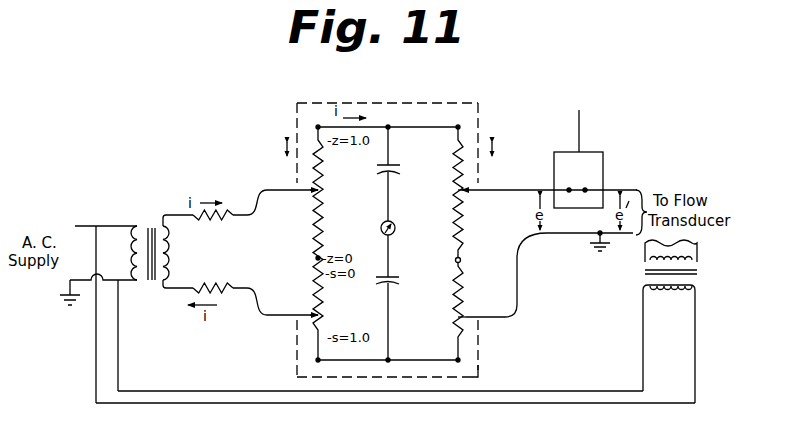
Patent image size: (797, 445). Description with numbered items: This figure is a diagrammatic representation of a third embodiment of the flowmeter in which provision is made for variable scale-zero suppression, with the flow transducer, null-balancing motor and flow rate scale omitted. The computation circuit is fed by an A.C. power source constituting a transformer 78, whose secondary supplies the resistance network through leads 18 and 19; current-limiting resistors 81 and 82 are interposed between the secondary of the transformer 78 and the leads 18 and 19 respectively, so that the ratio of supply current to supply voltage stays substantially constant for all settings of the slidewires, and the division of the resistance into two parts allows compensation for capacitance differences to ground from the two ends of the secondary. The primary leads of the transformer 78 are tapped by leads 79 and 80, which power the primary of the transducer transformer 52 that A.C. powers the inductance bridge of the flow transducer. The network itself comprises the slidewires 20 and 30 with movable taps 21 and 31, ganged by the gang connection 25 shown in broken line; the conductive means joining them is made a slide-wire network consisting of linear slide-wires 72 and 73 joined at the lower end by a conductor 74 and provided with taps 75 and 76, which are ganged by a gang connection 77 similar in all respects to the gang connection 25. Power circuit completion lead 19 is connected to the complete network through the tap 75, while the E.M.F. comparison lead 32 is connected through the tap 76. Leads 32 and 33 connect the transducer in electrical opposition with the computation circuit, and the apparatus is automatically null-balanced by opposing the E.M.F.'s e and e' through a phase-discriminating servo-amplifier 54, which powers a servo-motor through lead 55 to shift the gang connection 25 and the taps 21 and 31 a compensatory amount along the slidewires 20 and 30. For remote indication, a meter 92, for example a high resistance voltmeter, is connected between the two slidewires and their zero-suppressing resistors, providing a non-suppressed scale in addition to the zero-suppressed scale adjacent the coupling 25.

The lead 18 is at (271, 190).
The lead 19 is at (254, 289).
The slidewire 20 is at (322, 204).
The movable tap 21 is at (310, 194).
The gang connection 25 is at (408, 102).
The slidewire 30 is at (456, 173).
The movable tap 31 is at (466, 194).
The lead 32 is at (520, 268).
The lead 33 is at (530, 190).
The transducer transformer 52 is at (705, 271).
The servo-amplifier 54 is at (603, 172).
The lead 55 is at (583, 126).
The linear slide-wire 72 is at (322, 291).
The linear slide-wire 73 is at (455, 302).
The conductor 74 is at (367, 360).
The tap 75 is at (310, 312).
The tap 76 is at (468, 309).
The gang connection 77 is at (479, 372).
The transformer 78 is at (154, 222).
The lead 79 is at (133, 390).
The lead 80 is at (152, 404).
The current-limiting resistor 81 is at (226, 221).
The current-limiting resistor 82 is at (216, 285).
The meter 92 is at (395, 229).